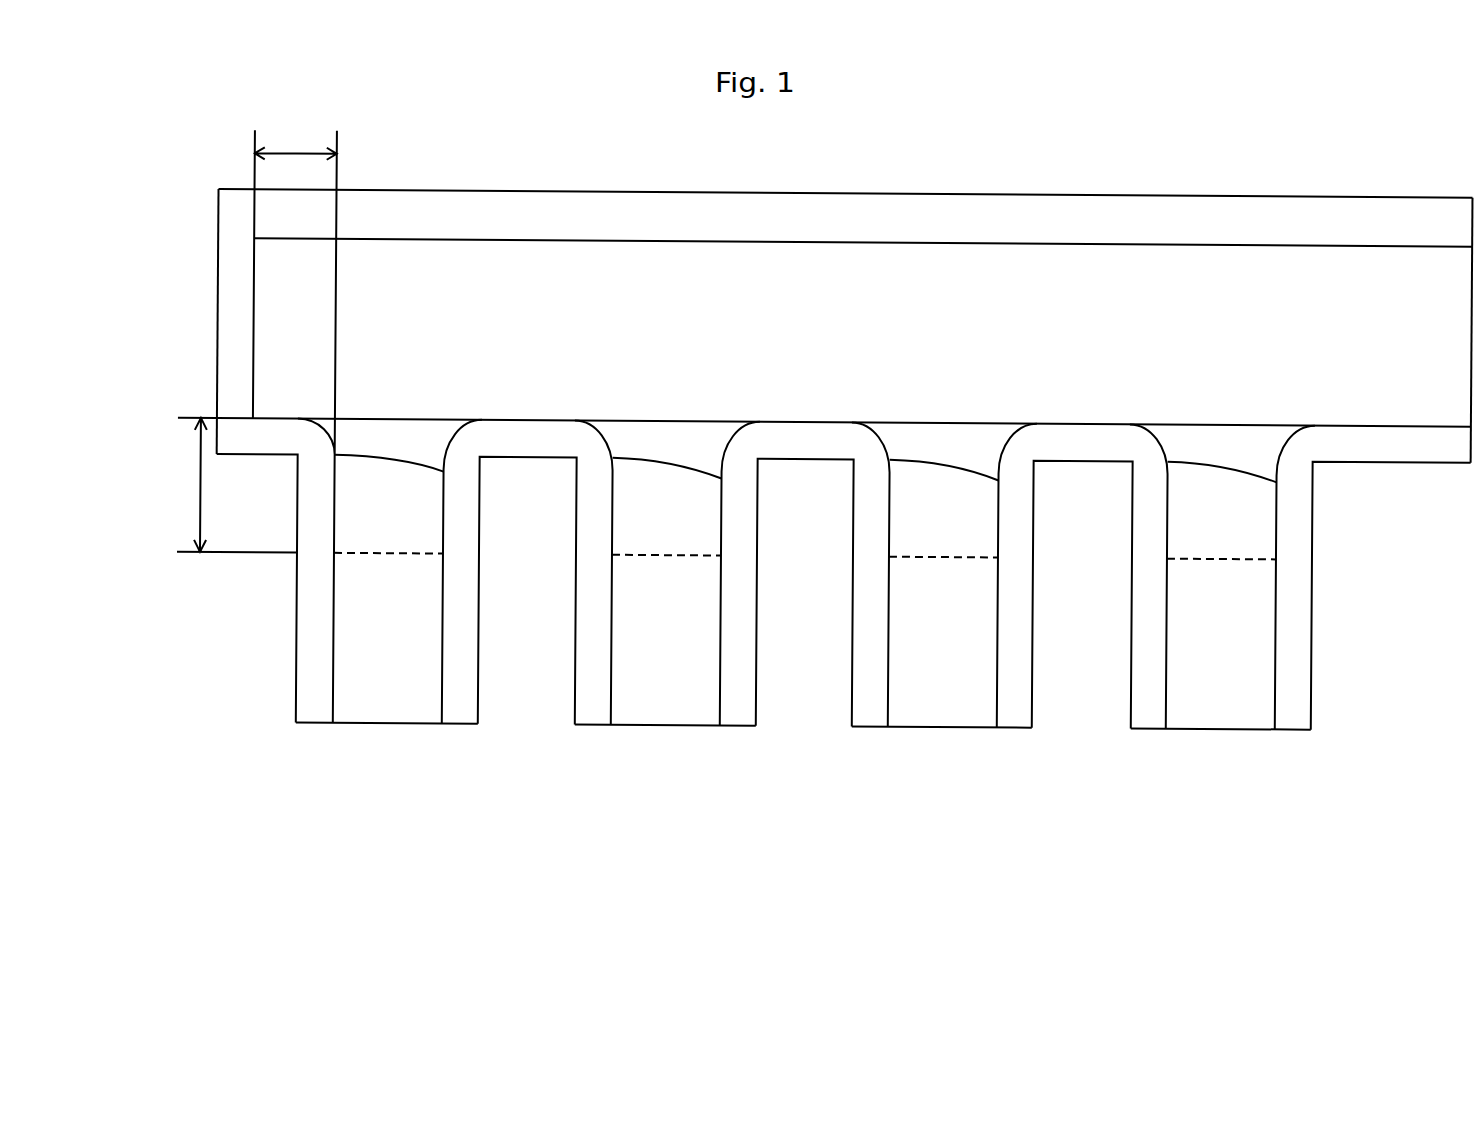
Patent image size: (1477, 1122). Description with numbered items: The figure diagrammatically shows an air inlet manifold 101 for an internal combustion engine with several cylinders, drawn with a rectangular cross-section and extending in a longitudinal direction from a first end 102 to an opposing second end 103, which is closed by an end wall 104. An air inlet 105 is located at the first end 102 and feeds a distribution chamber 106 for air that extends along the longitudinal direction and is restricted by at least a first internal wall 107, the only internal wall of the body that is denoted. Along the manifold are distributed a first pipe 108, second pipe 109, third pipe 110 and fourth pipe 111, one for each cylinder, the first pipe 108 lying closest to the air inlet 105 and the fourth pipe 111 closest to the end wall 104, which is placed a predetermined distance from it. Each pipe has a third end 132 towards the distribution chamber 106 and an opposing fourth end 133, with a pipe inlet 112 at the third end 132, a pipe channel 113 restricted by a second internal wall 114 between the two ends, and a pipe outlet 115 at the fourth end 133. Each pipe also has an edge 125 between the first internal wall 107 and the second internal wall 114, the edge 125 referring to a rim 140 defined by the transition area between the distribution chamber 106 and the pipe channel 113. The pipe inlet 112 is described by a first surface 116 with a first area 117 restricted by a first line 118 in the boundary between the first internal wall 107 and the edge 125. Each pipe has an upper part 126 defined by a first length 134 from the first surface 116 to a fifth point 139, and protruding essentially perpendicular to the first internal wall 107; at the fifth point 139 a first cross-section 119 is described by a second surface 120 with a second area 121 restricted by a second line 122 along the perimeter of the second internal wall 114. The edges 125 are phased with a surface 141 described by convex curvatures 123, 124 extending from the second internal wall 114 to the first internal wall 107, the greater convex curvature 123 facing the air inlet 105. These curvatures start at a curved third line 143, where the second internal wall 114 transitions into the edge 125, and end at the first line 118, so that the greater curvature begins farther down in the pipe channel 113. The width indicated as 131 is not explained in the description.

The air inlet manifold 101 is at (285, 807).
The first end 102 is at (1457, 478).
The second end 103 is at (205, 357).
The end wall 104 is at (248, 285).
The air inlet 105 is at (1458, 332).
The distribution chamber 106 is at (825, 317).
The first internal wall 107 is at (1083, 425).
The first pipe 108 is at (1130, 680).
The second pipe 109 is at (853, 690).
The third pipe 110 is at (575, 672).
The fourth pipe 111 is at (295, 608).
The pipe inlet 112 is at (1232, 427).
The pipe channel 113 is at (399, 655).
The second internal wall 114 is at (998, 690).
The pipe outlet 115 is at (667, 722).
The first surface 116 is at (1163, 425).
The first area 117 is at (1187, 425).
The first line 118 is at (476, 421).
The first cross-section 119 is at (1250, 563).
The second surface 120 is at (1227, 560).
The second area 121 is at (1240, 563).
The second line 122 is at (1167, 560).
The convex curvature 123 is at (725, 438).
The convex curvature 124 is at (602, 437).
The edge 125 is at (752, 438).
The upper part 126 is at (177, 515).
The width 131 is at (308, 134).
The third end 132 is at (340, 420).
The fourth end 133 is at (373, 722).
The first length 134 is at (171, 495).
The fifth point 139 is at (332, 560).
The rim 140 is at (878, 440).
The surface 141 is at (667, 433).
The third line 143 is at (927, 473).